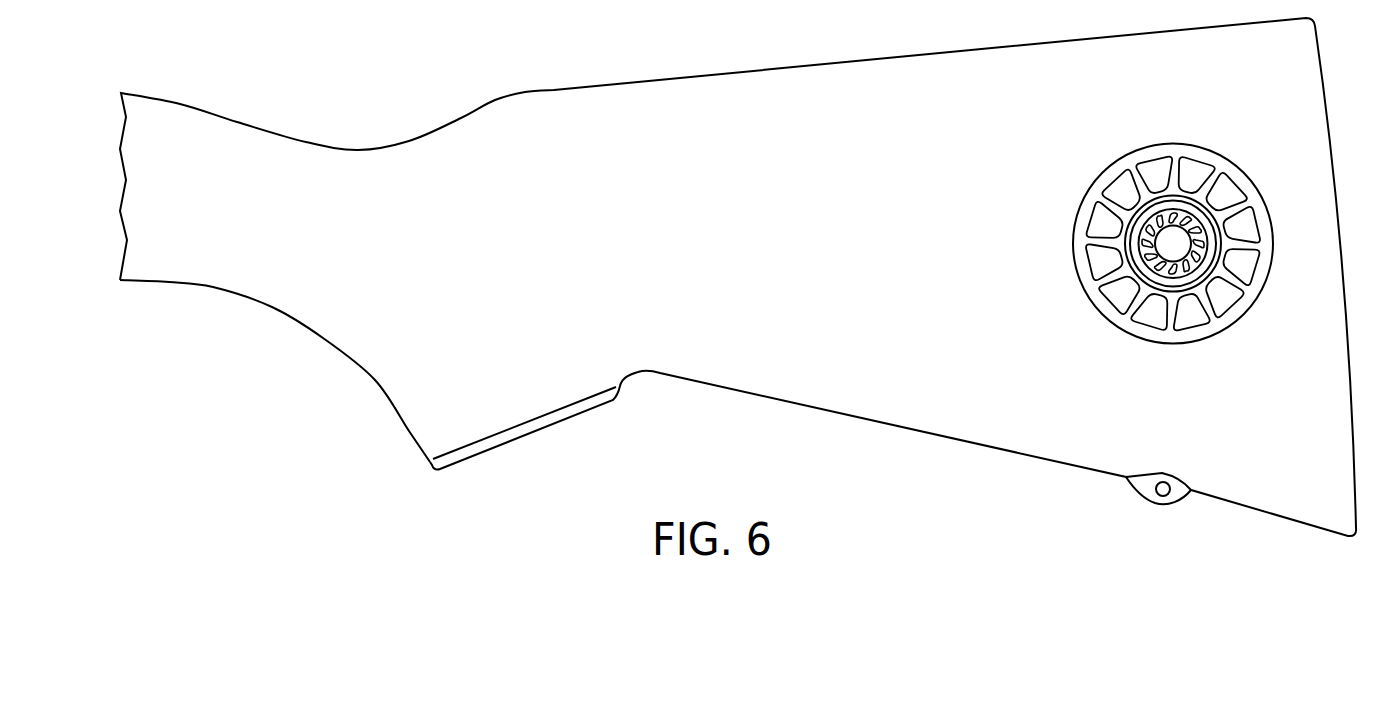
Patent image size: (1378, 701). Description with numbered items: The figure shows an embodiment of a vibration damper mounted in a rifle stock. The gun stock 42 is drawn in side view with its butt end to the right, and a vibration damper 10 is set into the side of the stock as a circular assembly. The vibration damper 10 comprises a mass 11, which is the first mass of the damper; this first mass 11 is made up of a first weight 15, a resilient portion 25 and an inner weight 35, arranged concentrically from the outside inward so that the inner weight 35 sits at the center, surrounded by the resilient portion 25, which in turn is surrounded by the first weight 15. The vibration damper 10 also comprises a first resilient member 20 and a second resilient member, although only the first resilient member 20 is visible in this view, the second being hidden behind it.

The gun stock 42 is at (722, 91).
The vibration damper 10 is at (1173, 143).
The mass 11 is at (1189, 196).
The first weight 15 is at (1140, 268).
The resilient member 20 is at (1100, 178).
The resilient portion 25 is at (1192, 277).
The inner weight 35 is at (1180, 243).